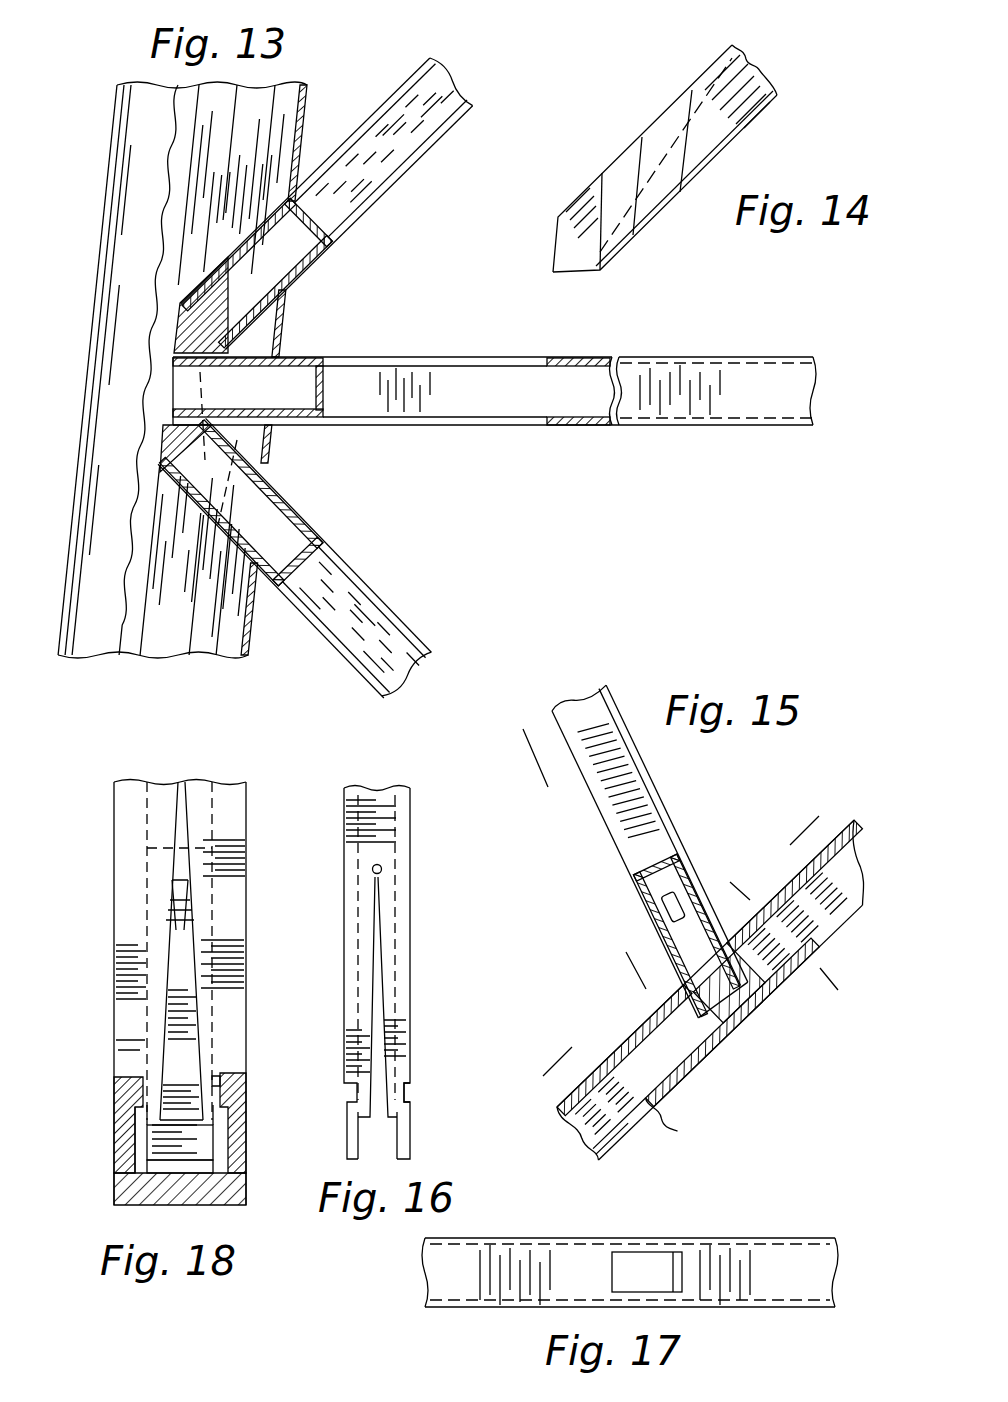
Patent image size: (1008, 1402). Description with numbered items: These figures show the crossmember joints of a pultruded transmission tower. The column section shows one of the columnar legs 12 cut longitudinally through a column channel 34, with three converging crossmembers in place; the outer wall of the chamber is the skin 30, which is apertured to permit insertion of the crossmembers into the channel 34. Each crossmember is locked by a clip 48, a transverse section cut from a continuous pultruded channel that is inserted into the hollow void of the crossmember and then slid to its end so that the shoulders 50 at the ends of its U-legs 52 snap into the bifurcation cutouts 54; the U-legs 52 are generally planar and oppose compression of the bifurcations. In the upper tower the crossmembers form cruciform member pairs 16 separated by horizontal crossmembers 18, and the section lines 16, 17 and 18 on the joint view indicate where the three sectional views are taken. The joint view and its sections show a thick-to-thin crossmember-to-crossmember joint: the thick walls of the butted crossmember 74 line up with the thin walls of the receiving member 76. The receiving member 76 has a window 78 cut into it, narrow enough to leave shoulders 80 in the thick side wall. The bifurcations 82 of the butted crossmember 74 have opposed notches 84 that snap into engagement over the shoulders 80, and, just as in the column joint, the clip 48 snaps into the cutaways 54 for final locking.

In FIG. 13, the columnar leg 12 is at (100, 205).
In FIG. 13, the plane-defining channel 34 is at (267, 117).
In FIG. 13, the skin 30 is at (273, 464).
In FIG. 13, the clip 48 is at (305, 214).
In FIG. 15, the clip 48 is at (645, 869).
In FIG. 18, the clip 48 is at (183, 846).
In FIG. 13, the bifurcation cutout 54 is at (250, 338).
In FIG. 18, the bifurcation cutout 54 is at (215, 1132).
In FIG. 15, the shoulder 50 is at (697, 1068).
In FIG. 18, the shoulder 50 is at (207, 1148).
In FIG. 15, the U-leg 52 is at (673, 907).
In FIG. 18, the U-leg 52 is at (186, 896).
In FIG. 15, the cruciform member pair 16 is at (531, 768).
In FIG. 15, the section line 17- 17 is at (801, 820).
In FIG. 15, the horizontal crossmember 18 is at (747, 883).
In FIG. 18, the butted crossmember 74 is at (247, 911).
In FIG. 18, the receiving member 76 is at (128, 1170).
In FIG. 17, the window 78 is at (640, 1268).
In FIG. 18, the window 78 is at (216, 1080).
In FIG. 18, the shoulder 80 is at (120, 1131).
In FIG. 16, the bifurcation 82 is at (357, 1148).
In FIG. 16, the notch 84 is at (412, 1093).